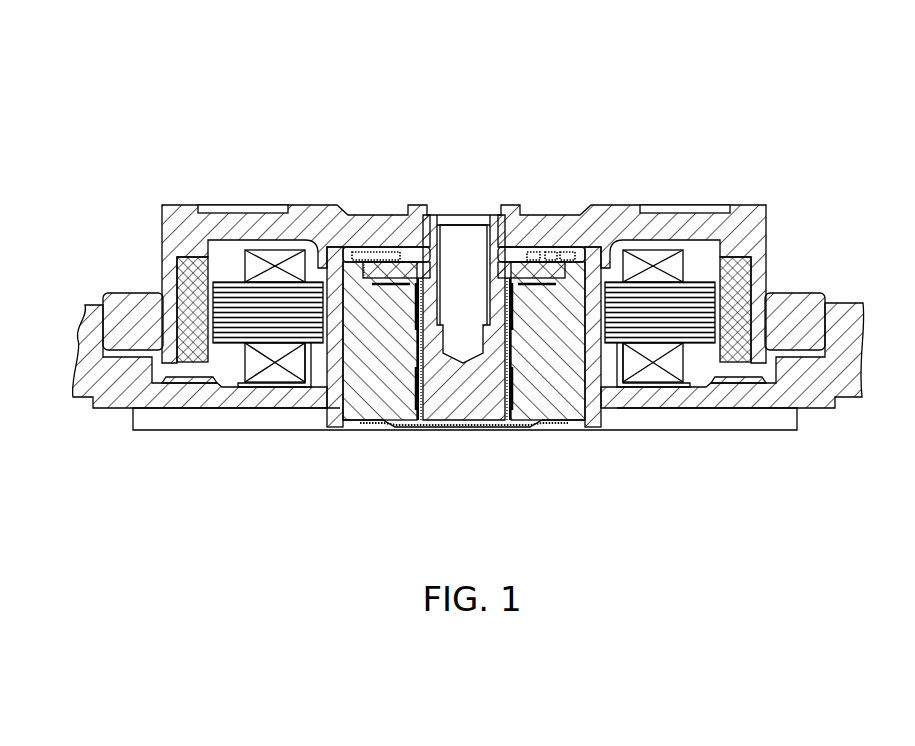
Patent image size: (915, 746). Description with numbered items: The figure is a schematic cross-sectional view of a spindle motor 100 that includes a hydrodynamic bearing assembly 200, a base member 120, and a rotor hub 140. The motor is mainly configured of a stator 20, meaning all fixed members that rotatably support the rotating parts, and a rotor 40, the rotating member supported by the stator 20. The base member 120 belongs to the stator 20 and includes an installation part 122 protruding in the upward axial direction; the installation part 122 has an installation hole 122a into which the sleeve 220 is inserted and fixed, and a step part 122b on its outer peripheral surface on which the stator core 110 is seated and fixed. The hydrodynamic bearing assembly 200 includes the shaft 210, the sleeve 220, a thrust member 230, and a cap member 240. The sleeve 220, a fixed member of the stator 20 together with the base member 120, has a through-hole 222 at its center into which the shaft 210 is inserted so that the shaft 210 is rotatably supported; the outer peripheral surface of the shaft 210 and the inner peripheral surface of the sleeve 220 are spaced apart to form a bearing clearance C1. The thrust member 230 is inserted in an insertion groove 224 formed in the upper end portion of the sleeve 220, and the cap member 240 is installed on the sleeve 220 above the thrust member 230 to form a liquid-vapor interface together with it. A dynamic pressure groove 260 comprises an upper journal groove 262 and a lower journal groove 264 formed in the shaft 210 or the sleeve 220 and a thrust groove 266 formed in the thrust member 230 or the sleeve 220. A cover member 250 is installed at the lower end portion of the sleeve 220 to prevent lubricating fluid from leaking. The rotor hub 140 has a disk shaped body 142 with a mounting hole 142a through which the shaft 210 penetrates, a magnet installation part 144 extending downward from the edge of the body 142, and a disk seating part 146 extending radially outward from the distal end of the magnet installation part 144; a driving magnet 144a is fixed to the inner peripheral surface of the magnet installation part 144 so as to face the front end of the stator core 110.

The spindle motor 100 is at (482, 24).
The stator 20 is at (822, 410).
The rotor 40 is at (770, 199).
The stator core 110 is at (690, 335).
The base member 120 is at (197, 408).
The installation part 122 is at (627, 335).
The installation hole 122a is at (343, 425).
The step part 122b is at (630, 340).
The rotor hub 140 is at (53, 128).
The body 142 is at (314, 218).
The mounting hole 142a is at (425, 207).
The magnet installation part 144 is at (172, 255).
The driving magnet 144a is at (752, 280).
The disk seating part 146 is at (125, 313).
The hydrodynamic bearing assembly 200 is at (369, 440).
The shaft 210 is at (448, 400).
The sleeve 220 is at (560, 405).
The through-hole 222 is at (505, 410).
The insertion groove 224 is at (336, 240).
The thrust member 230 is at (540, 255).
The cap member 240 is at (572, 256).
The cover member 250 is at (463, 430).
The dynamic pressure groove 260 is at (428, 95).
The upper journal groove 262 is at (480, 350).
The lower journal groove 264 is at (476, 400).
The thrust groove 266 is at (548, 253).
The bearing clearance C1 is at (405, 428).